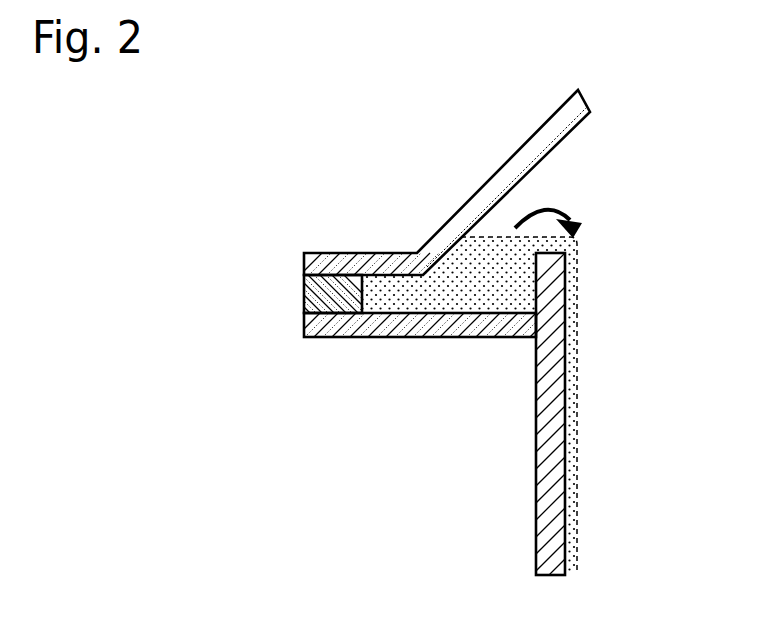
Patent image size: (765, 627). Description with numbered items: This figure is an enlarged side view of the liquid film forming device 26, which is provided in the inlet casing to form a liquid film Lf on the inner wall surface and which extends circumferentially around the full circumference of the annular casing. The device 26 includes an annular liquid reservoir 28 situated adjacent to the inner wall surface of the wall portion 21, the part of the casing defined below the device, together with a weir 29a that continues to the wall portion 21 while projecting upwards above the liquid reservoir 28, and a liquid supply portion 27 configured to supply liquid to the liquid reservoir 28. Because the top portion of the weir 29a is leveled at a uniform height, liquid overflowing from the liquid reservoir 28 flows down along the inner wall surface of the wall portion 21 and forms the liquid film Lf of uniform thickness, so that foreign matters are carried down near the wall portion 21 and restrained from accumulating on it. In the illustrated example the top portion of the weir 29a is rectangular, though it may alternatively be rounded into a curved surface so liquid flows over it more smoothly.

The wall portion 21 is at (528, 503).
The liquid film forming device 26 is at (328, 198).
The liquid supply portion 27 is at (303, 293).
The liquid reservoir 28 is at (413, 305).
The weir 29a is at (550, 275).
The liquid film Lf is at (578, 388).